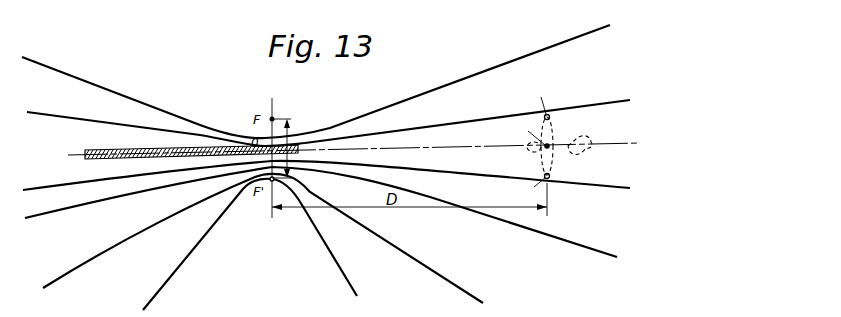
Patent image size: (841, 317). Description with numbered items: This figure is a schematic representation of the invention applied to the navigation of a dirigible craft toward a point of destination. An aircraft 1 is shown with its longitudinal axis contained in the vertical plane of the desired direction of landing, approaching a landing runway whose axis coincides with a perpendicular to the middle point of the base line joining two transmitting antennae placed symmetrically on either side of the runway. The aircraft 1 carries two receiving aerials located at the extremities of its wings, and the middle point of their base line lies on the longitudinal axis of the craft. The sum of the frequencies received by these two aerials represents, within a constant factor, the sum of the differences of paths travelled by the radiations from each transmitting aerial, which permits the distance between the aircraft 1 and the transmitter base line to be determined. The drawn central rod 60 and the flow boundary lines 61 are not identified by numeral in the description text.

The central rod / shaft 60 is at (180, 153).
The flow boundary lines 61 is at (508, 113).
The propeller 1 is at (566, 146).